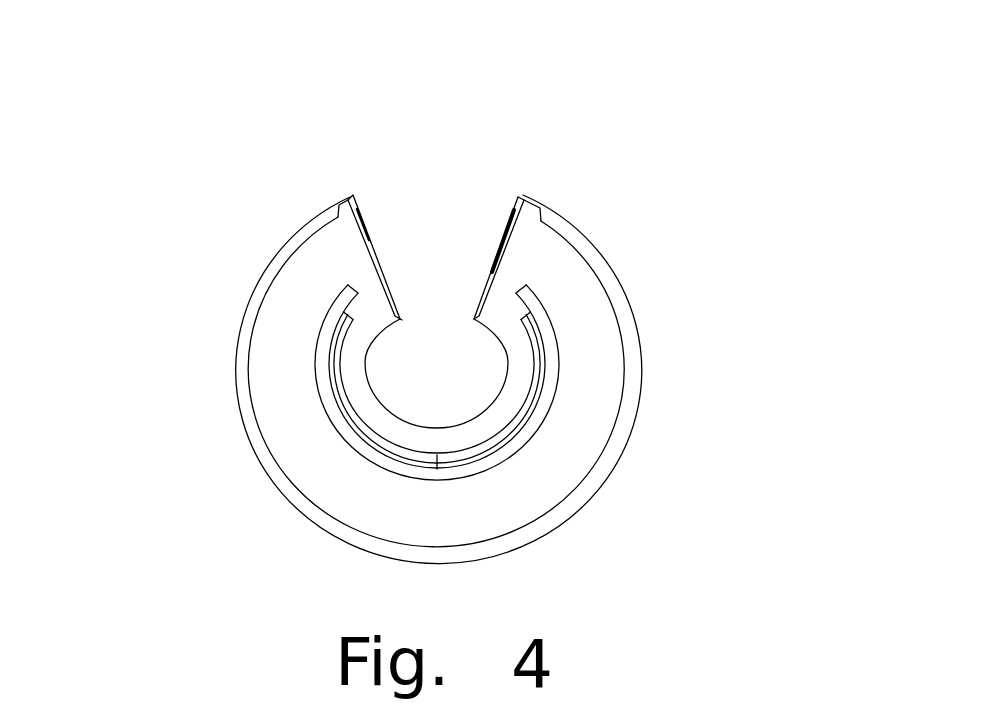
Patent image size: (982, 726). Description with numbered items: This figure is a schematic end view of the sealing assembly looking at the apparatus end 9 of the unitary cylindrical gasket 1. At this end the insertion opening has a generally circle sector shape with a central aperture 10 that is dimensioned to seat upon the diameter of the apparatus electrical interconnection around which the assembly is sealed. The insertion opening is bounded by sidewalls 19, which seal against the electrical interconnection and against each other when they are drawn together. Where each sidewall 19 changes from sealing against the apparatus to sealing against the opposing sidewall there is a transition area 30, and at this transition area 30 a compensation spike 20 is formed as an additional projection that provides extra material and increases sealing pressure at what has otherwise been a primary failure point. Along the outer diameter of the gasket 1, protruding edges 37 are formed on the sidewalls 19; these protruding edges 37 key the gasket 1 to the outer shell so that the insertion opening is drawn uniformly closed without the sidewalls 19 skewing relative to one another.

The cylindrical gasket 1 is at (663, 324).
The apparatus end 9 is at (499, 497).
The central aperture 10 is at (435, 374).
The sidewall 19 is at (377, 253).
The compensation spike 20 is at (378, 267).
The transition area 30 is at (377, 273).
The protruding edge 37 is at (345, 206).